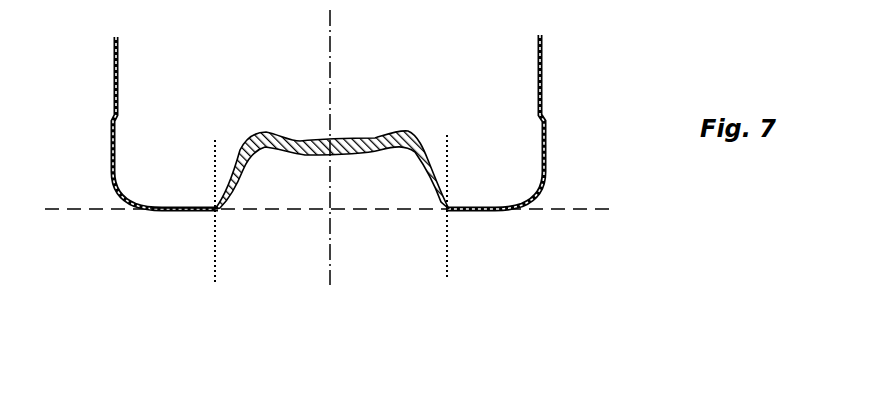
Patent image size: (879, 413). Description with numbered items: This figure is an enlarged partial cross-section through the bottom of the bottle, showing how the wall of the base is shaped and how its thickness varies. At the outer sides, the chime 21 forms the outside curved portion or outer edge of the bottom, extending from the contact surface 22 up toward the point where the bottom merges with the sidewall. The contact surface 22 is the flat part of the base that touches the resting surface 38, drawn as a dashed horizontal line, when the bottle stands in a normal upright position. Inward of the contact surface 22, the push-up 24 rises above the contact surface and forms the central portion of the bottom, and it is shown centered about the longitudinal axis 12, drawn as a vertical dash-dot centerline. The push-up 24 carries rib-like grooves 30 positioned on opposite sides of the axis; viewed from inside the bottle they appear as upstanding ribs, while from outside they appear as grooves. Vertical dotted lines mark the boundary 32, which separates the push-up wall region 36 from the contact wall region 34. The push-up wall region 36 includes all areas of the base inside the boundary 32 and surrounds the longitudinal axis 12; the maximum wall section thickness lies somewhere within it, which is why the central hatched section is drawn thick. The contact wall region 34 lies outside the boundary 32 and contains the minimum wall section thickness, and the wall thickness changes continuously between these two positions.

The longitudinal axis 12 is at (328, 75).
The chime 21 is at (537, 190).
The contact surface 22 is at (192, 210).
The push-up 24 is at (308, 155).
The rib-like grooves 30 is at (264, 150).
The boundary 32 is at (215, 180).
The contact wall region 34 is at (128, 195).
The push-up wall region 36 is at (243, 143).
The resting surface 38 is at (570, 209).